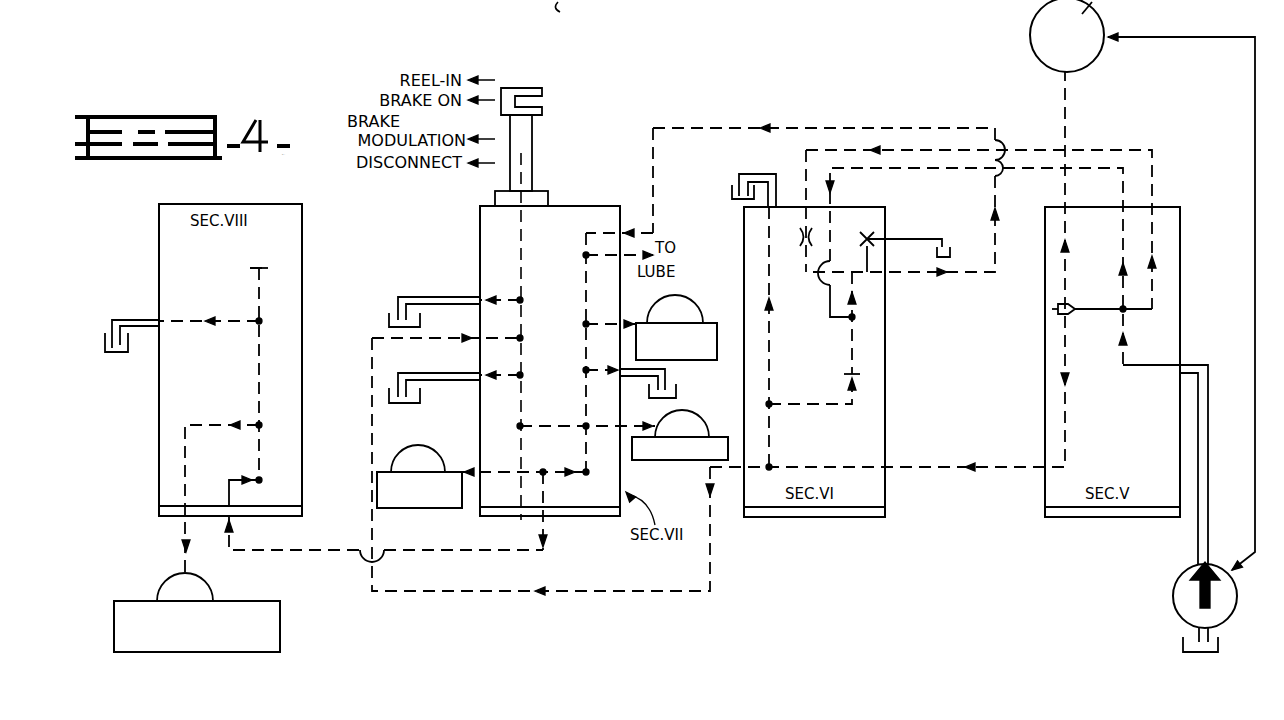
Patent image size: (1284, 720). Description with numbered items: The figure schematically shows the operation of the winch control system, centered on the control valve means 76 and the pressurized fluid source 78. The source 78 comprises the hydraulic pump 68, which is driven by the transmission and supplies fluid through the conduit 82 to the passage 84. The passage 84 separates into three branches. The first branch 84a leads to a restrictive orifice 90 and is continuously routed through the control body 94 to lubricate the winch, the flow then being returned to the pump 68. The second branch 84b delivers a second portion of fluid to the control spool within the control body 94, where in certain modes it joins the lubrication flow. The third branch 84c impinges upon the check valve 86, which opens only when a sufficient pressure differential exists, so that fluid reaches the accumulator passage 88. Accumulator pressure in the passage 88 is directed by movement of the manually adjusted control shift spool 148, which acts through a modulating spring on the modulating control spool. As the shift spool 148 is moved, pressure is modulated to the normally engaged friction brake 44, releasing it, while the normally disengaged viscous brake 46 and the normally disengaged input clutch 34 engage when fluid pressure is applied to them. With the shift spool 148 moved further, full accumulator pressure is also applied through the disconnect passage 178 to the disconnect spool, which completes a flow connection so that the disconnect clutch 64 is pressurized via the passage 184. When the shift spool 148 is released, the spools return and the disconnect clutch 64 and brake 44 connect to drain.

The control body 94 is at (572, 11).
The control valve means 76 is at (810, 100).
The control shift spool 148 is at (527, 133).
The accumulator passage 88 is at (372, 350).
The restrictive orifice 90 is at (805, 226).
The viscous brake 46 is at (688, 308).
The input clutch 34 is at (697, 426).
The friction brake 44 is at (421, 458).
The passage 184 is at (198, 425).
The disconnect passage 178 is at (305, 552).
The disconnect clutch 64 is at (212, 590).
The first branch 84a is at (1152, 165).
The second branch 84b is at (1123, 200).
The third branch 84c is at (1090, 300).
The passage 84 is at (1124, 322).
The check valve 86 is at (1068, 318).
The conduit 82 is at (1198, 365).
The pressurized fluid source 78 is at (1184, 301).
The hydraulic pump 68 is at (1178, 596).